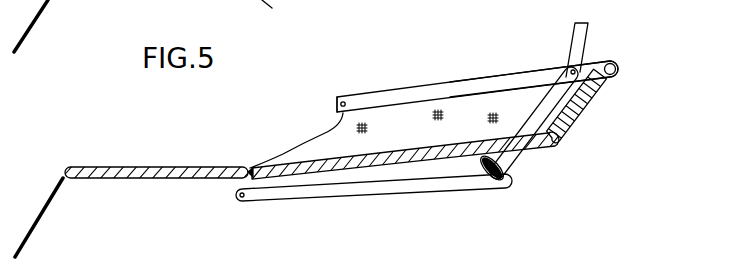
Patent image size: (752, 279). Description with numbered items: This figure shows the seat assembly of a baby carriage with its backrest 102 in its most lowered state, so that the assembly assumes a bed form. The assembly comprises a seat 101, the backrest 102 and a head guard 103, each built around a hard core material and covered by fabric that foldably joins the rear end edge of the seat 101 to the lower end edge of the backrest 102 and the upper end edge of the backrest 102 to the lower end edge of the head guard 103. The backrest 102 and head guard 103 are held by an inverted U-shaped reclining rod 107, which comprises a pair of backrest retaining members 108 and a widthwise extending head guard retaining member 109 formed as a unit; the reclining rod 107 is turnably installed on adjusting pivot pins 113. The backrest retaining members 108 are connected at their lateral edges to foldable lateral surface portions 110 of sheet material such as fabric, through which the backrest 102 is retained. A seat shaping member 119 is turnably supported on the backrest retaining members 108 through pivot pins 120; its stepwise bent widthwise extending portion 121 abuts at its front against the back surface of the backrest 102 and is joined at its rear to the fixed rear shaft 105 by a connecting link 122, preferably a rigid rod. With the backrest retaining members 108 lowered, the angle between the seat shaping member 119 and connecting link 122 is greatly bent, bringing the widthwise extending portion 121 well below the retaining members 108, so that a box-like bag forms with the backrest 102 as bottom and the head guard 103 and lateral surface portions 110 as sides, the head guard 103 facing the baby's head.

The seat 101 is at (190, 166).
The backrest 102 is at (390, 168).
The head guard 103 is at (578, 113).
The rear shaft 105 is at (243, 200).
The reclining rod 107 is at (382, 91).
The backrest retaining member 108 is at (478, 83).
The head guard retaining member 109 is at (614, 63).
The foldable lateral surface portion 110 is at (418, 118).
The adjusting pivot pin 113 is at (343, 102).
The seat shaping member 119 is at (540, 103).
The pivot pin 120 is at (585, 40).
The widthwise extending portion 121 is at (486, 175).
The connecting link 122 is at (307, 193).